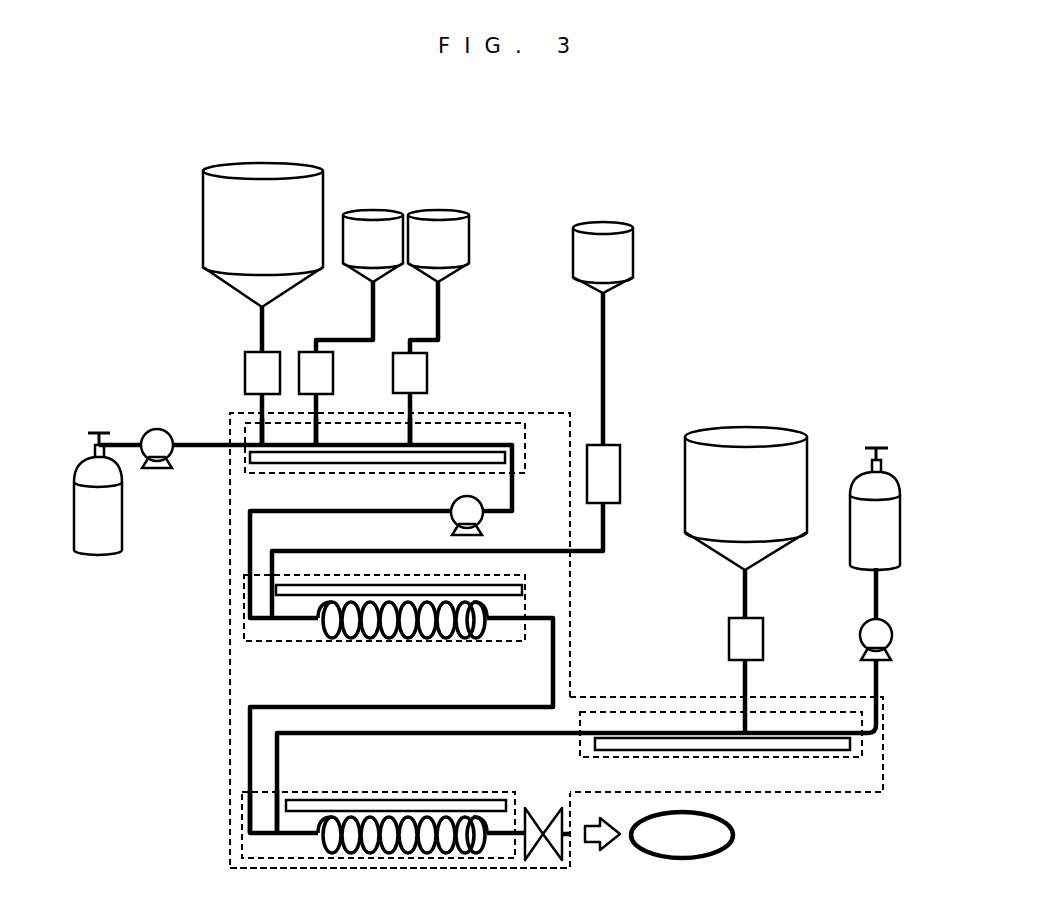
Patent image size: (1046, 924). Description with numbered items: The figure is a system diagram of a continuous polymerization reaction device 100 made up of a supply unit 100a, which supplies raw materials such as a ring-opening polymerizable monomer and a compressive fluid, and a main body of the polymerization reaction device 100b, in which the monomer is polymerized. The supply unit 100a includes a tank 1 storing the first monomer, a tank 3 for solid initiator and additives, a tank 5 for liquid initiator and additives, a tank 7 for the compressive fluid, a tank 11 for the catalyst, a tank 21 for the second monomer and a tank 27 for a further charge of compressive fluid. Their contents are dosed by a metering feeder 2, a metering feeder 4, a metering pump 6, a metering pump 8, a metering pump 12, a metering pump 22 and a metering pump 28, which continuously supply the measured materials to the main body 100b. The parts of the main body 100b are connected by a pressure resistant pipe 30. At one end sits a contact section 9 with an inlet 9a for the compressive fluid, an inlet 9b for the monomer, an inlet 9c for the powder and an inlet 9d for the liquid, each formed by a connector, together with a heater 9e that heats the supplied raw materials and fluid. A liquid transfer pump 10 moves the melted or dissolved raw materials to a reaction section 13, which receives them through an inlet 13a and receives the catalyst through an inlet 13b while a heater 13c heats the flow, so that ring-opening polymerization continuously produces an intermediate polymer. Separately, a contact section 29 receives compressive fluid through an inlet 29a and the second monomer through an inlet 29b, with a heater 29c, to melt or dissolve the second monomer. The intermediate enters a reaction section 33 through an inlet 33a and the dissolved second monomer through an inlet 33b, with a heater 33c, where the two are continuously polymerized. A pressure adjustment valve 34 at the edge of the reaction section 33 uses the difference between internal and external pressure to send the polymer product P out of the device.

The tank 1 is at (263, 172).
The metering feeder 2 is at (268, 358).
The tank 3 is at (380, 215).
The metering feeder 4 is at (330, 386).
The tank 5 is at (447, 215).
The metering pump 6 is at (420, 386).
The tank 7 is at (122, 516).
The metering pump 8 is at (157, 428).
The contact section 9 is at (500, 413).
The inlet 9a is at (244, 443).
The inlet 9b is at (262, 418).
The inlet 9c is at (318, 422).
The inlet 9d is at (413, 421).
The heater 9e is at (295, 473).
The liquid transfer pump 10 is at (483, 528).
The tank 11 is at (607, 226).
The metering pump 12 is at (610, 484).
The reaction section 13 is at (384, 645).
The inlet 13a is at (250, 573).
The inlet 13b is at (272, 574).
The heater 13c is at (522, 591).
The tank 21 is at (775, 432).
The metering pump 22 is at (764, 618).
The tank 27 is at (858, 484).
The metering pump 28 is at (866, 622).
The contact section 29 is at (838, 712).
The inlet 29a is at (880, 736).
The inlet 29b is at (745, 712).
The heater 29c is at (640, 752).
The pressure resistant pipe 30 is at (378, 510).
The reaction section 33 is at (385, 855).
The inlet 33a is at (250, 792).
The inlet 33b is at (280, 792).
The heater 33c is at (348, 800).
The pressure adjustment valve 34 is at (555, 855).
The polymerization reaction device 100 is at (516, 176).
The supply unit 100a is at (724, 351).
The main body of the polymerization reaction device 100b is at (462, 870).
The polymer product P is at (723, 837).